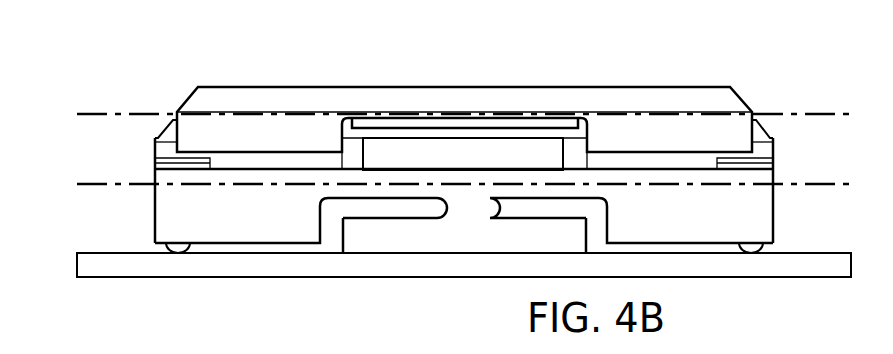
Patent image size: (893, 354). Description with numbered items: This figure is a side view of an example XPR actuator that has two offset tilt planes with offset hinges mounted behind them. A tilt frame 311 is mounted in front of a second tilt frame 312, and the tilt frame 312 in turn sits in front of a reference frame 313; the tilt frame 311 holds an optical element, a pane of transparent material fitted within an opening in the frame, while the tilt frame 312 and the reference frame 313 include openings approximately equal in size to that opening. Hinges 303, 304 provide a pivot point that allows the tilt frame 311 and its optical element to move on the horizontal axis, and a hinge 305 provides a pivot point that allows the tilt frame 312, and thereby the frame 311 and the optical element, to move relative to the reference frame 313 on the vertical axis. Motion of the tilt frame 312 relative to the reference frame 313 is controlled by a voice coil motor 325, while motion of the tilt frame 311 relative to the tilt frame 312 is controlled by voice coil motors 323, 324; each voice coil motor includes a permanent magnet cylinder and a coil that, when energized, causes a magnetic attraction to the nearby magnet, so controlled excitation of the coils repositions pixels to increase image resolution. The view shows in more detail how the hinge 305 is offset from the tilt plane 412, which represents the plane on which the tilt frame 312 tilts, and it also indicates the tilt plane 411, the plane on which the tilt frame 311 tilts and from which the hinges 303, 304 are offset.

The hinge 303 is at (165, 126).
The hinge 304 is at (757, 120).
The hinge 305 is at (463, 222).
The tilt frame 311 is at (420, 86).
The tilt frame 312 is at (155, 215).
The reference frame 313 is at (78, 260).
The voice coil motor 323 is at (173, 250).
The voice coil motor 324 is at (757, 250).
The voice coil motor 325 is at (498, 145).
The tilt plane 411 is at (115, 113).
The tilt plane 412 is at (815, 186).